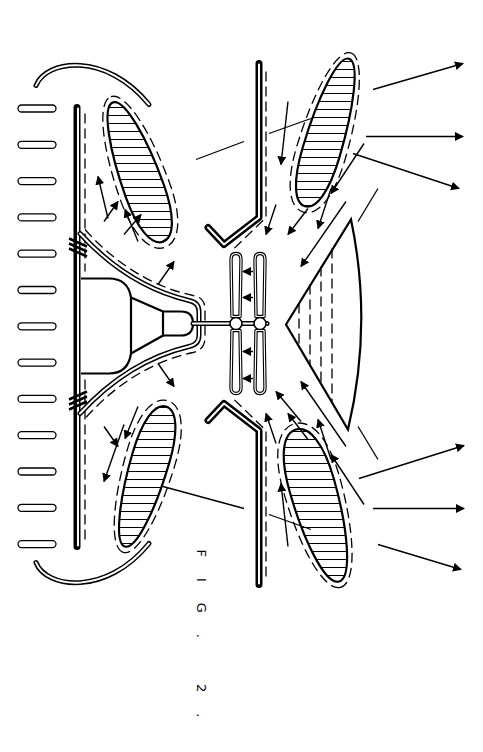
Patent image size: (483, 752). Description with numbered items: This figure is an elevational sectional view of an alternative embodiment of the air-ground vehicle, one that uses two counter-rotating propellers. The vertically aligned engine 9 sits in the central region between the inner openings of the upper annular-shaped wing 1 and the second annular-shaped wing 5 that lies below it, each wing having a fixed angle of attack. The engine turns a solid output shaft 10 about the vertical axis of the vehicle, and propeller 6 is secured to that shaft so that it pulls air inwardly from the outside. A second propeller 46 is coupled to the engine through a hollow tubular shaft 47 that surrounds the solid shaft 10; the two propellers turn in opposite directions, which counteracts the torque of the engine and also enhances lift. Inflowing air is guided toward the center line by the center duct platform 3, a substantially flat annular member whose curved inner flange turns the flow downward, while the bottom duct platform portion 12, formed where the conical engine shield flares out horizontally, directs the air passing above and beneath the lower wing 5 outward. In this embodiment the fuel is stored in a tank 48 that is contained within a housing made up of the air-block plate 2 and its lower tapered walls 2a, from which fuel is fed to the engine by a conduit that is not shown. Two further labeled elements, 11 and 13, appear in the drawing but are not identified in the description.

The upper annular-shaped wing 1 is at (355, 56).
The air-block plate 2 is at (336, 325).
The lower tapered walls 2a is at (311, 324).
The center duct platform 3 is at (254, 99).
The second annular-shaped wing 5 is at (180, 156).
The propeller 6 is at (284, 394).
The engine 9 is at (140, 272).
The output shaft 10 is at (248, 328).
The wall 11 is at (126, 384).
The bottom duct platform portion 12 is at (84, 152).
The hinge 13 is at (72, 254).
The counter-rotating propeller 46 is at (186, 352).
The hollow tubular shaft 47 is at (220, 325).
The fuel tank 48 is at (317, 325).